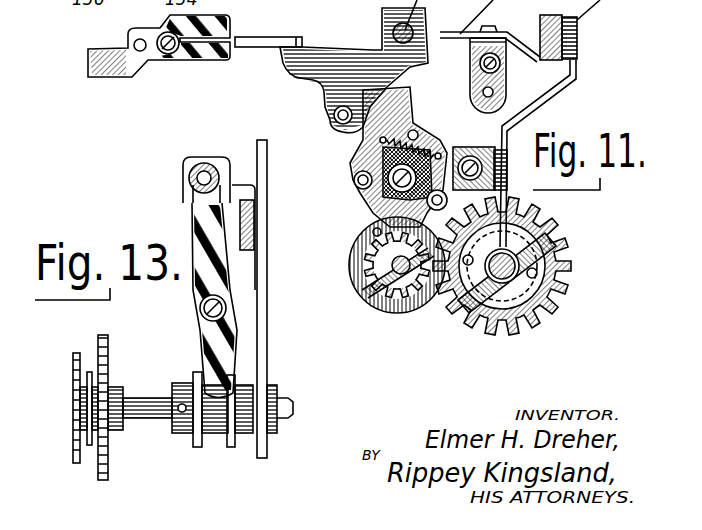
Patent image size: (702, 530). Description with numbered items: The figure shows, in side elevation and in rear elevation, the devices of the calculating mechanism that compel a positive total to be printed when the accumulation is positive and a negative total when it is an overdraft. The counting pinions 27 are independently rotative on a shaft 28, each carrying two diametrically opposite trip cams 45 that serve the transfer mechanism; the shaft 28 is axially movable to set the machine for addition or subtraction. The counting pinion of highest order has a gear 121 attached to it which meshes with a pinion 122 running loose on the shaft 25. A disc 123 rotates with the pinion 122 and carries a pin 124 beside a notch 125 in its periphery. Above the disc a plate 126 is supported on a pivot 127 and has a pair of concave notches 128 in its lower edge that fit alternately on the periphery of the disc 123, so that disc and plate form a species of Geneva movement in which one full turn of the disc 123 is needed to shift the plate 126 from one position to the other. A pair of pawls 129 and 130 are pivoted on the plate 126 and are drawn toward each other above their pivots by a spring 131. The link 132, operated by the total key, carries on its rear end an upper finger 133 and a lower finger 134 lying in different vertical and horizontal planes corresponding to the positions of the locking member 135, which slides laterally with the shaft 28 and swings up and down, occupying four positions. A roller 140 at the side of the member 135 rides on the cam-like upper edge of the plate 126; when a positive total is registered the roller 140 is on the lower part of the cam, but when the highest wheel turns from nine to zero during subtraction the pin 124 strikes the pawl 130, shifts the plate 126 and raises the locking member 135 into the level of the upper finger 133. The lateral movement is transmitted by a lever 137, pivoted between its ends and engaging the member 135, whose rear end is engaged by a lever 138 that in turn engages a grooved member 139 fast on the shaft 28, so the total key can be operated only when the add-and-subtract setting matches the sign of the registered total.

In FIG. 11, the link 132 is at (123, 63).
In FIG. 11, the upper finger 133 is at (230, 22).
In FIG. 11, the lower finger 134 is at (203, 50).
In FIG. 11, the locking member 135 is at (330, 60).
In FIG. 11, the roller 140 is at (334, 116).
In FIG. 11, the spring 131 is at (415, 122).
In FIG. 11, the pawl 130 is at (462, 147).
In FIG. 11, the pawl 129 is at (378, 150).
In FIG. 11, the plate 126 is at (395, 162).
In FIG. 11, the pivot 127 is at (378, 198).
In FIG. 11, the concave notches 128 is at (382, 206).
In FIG. 11, the notch 125 is at (372, 222).
In FIG. 11, the pin 124 is at (370, 238).
In FIG. 11, the disc 123 is at (410, 316).
In FIG. 11, the pinion 122 is at (387, 313).
In FIG. 11, the shaft 25 is at (392, 286).
In FIG. 11, the gear 121 is at (572, 254).
In FIG. 13, the gear 121 is at (102, 478).
In FIG. 11, the trip cams 45 is at (565, 271).
In FIG. 13, the trip cams 45 is at (87, 375).
In FIG. 11, the counting pinions 27 is at (545, 284).
In FIG. 13, the counting pinions 27 is at (75, 418).
In FIG. 11, the shaft 28 is at (495, 278).
In FIG. 13, the shaft 28 is at (293, 412).
In FIG. 13, the lever 137 is at (183, 185).
In FIG. 13, the lever 138 is at (193, 223).
In FIG. 13, the grooved member 139 is at (197, 447).